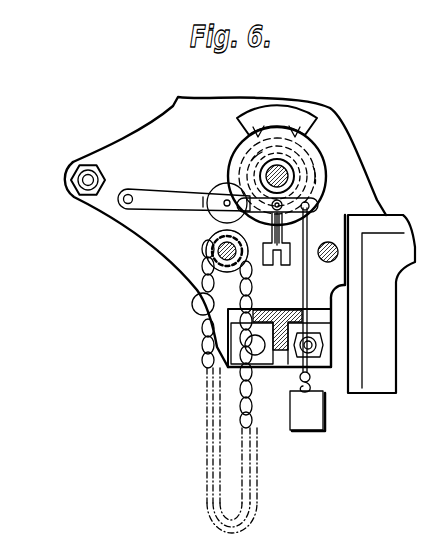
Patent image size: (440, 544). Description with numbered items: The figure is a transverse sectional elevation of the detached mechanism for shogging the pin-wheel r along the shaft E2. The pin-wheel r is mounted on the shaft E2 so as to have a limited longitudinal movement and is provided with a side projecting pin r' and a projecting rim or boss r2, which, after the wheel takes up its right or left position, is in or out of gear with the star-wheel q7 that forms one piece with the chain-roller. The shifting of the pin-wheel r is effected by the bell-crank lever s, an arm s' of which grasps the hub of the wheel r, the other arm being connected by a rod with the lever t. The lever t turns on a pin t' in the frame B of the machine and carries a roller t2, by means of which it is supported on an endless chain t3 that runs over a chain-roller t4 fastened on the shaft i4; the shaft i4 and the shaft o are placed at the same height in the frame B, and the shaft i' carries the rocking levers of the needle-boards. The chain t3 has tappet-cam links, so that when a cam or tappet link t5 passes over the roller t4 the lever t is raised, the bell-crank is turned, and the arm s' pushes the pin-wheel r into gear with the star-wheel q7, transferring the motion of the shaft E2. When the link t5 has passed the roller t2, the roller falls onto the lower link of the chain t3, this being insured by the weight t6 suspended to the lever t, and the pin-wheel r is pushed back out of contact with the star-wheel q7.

The frame B is at (383, 323).
The shaft i' is at (88, 164).
The lever t is at (184, 188).
The pin t' is at (132, 182).
The roller t2 is at (225, 199).
The pin-wheel r is at (279, 176).
The shaft E2 is at (282, 174).
The side projecting pin r' is at (238, 149).
The projecting rim or boss r2 is at (314, 173).
The star-wheel q7 is at (304, 118).
The bell-crank lever s is at (285, 285).
The arm s' is at (270, 239).
The shaft o is at (328, 260).
The chain-roller t4 is at (208, 242).
The shaft i4 is at (208, 257).
The endless chain t3 is at (258, 279).
The cam or tappet link t5 is at (202, 305).
The weight t6 is at (307, 420).